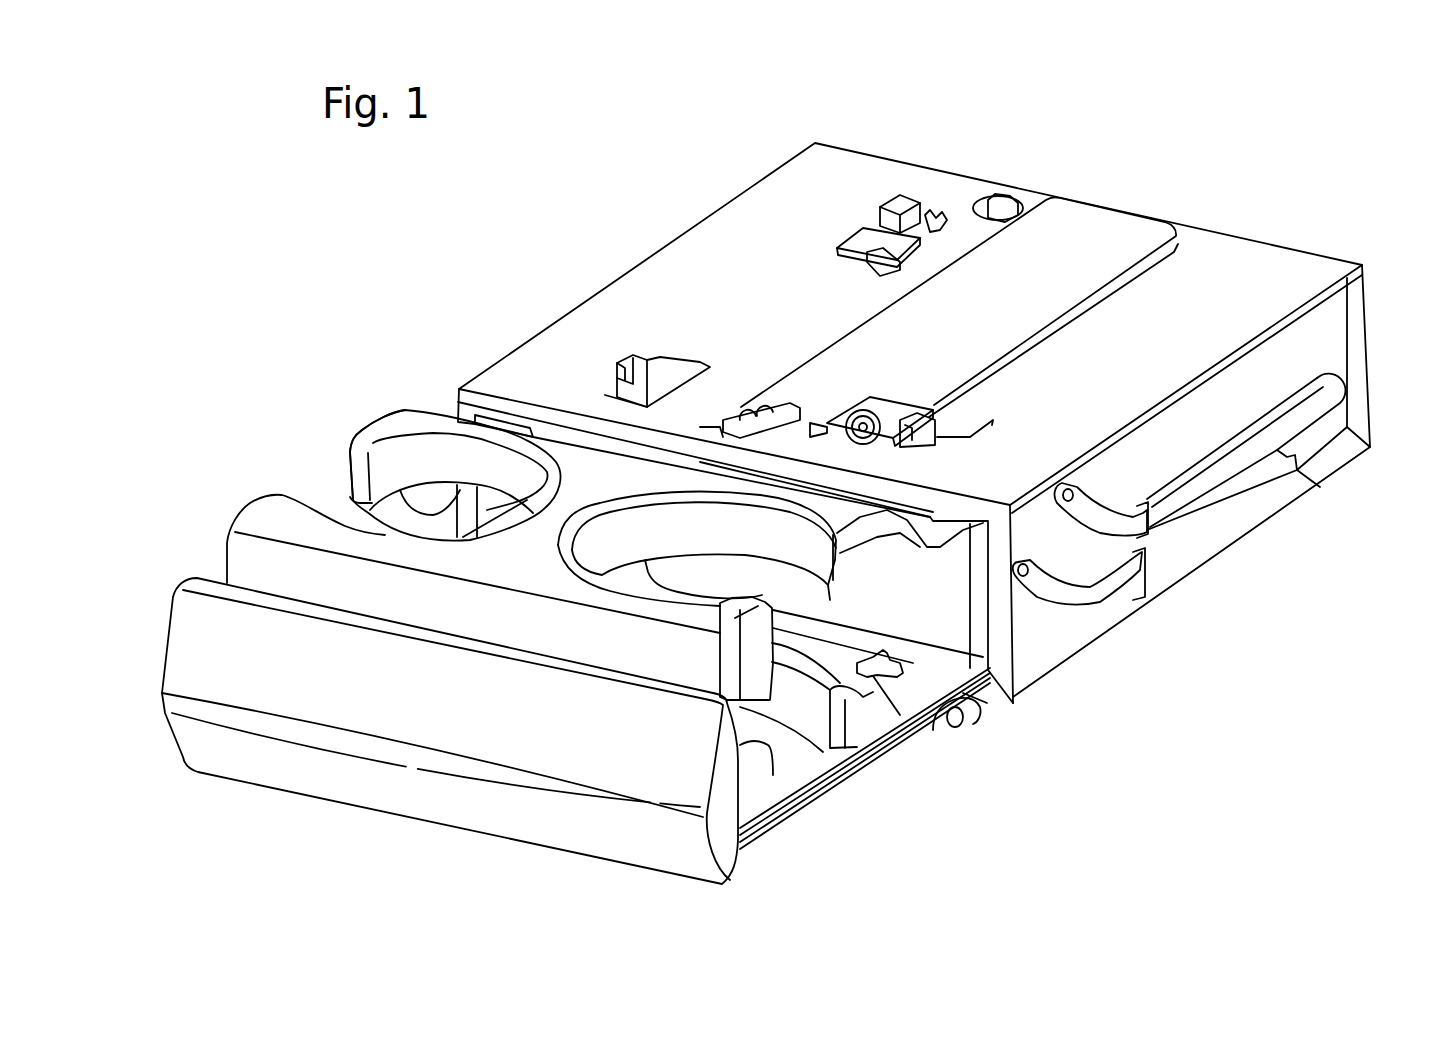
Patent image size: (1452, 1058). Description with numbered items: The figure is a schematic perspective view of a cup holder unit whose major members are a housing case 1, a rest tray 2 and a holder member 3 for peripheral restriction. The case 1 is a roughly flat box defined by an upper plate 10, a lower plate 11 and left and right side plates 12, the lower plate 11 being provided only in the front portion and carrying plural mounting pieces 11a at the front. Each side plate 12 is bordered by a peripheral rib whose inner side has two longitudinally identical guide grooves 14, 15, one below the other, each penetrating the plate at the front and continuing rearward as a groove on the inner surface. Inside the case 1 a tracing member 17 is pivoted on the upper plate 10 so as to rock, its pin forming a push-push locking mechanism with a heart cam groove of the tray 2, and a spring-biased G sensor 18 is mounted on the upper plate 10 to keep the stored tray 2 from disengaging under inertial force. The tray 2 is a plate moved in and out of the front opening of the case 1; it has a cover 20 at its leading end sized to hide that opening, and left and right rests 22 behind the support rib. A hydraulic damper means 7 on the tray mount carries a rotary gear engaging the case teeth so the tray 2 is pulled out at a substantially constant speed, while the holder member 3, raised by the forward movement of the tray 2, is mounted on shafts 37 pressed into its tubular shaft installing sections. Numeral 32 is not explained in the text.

The housing case 1 is at (664, 222).
The rest tray 2 is at (165, 596).
The holder member 3 is at (243, 497).
The damper means 7 is at (868, 412).
The upper plate 10 is at (1240, 262).
The lower plate 11 is at (1325, 482).
The mounting pieces 11a is at (968, 722).
The side plates 12 is at (1338, 352).
The guide groove 14 is at (1107, 583).
The guide groove 15 is at (1148, 530).
The tracing member 17 is at (1007, 203).
The G sensor 18 is at (860, 245).
The cover 20 is at (610, 838).
The rests 22 is at (813, 725).
The retaining hook 32 is at (320, 505).
The shafts 37 is at (1066, 488).